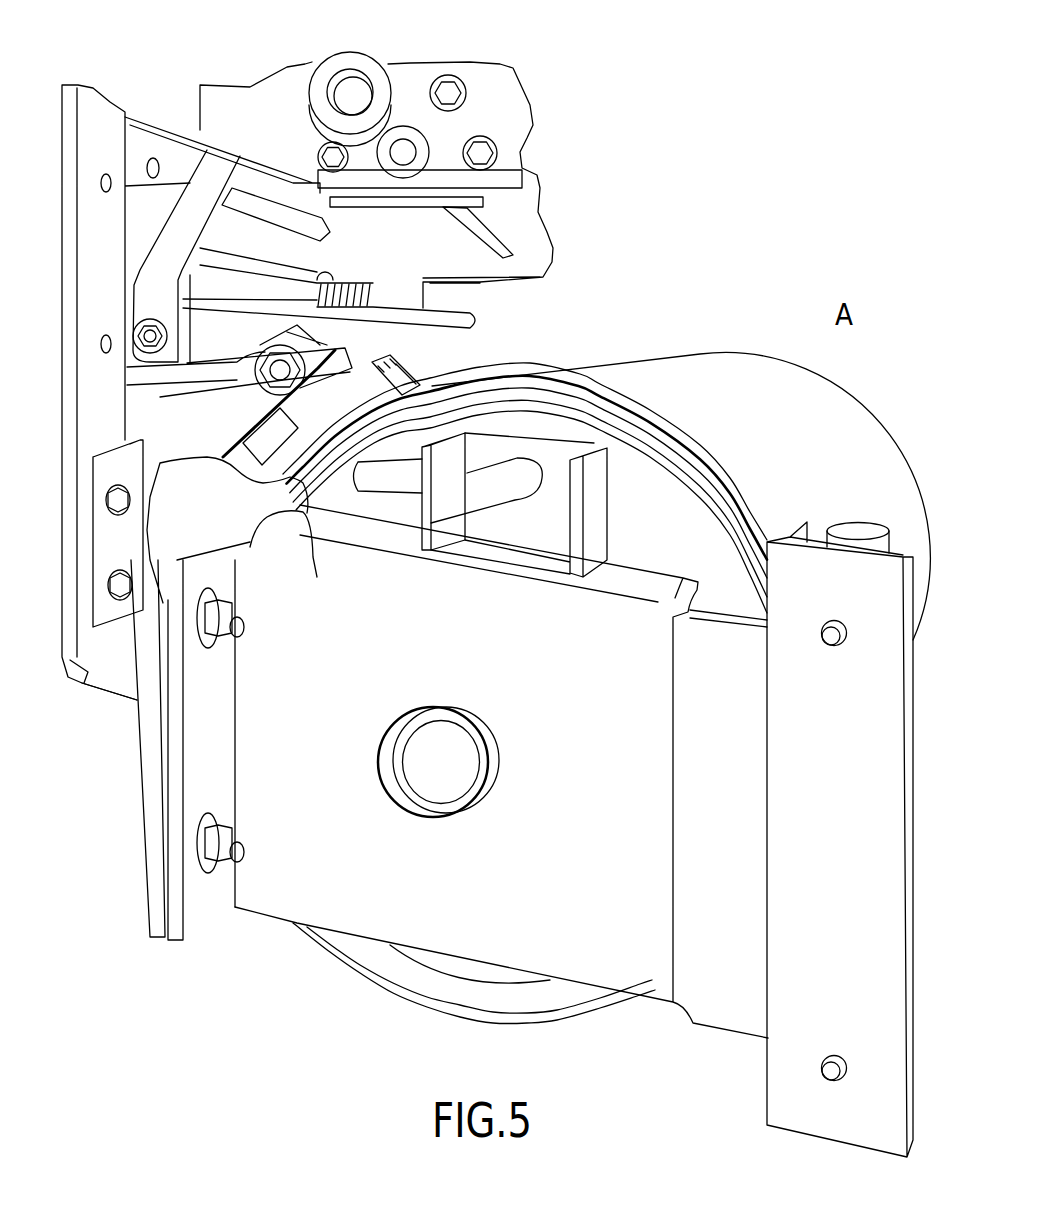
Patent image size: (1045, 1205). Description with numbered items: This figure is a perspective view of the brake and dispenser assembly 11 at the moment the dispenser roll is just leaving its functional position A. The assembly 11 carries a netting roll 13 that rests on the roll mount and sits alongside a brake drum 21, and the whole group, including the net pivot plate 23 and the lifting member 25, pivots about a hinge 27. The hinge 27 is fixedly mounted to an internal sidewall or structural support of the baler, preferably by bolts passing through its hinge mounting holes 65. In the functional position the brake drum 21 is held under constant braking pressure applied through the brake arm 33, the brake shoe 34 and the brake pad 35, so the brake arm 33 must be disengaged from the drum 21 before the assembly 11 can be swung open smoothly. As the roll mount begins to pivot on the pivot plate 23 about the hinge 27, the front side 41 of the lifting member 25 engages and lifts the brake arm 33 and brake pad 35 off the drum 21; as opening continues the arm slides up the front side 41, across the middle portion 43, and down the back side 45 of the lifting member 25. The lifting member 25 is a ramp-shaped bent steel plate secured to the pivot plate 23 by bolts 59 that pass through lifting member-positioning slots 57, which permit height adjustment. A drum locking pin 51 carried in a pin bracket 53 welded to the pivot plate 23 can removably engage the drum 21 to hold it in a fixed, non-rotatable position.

The dispenser roll assembly 11 is at (898, 355).
The roll 13 is at (763, 360).
The brake drum 21 is at (527, 400).
The net pivot plate 23 is at (588, 855).
The lifting member 25 is at (267, 485).
The hinge 27 is at (848, 890).
The brake arm 33 is at (223, 427).
The brake shoe 34 is at (350, 342).
The brake pad 35 is at (350, 400).
The front side 41 is at (268, 530).
The middle portion 43 is at (200, 467).
The back side 45 is at (175, 515).
The drum locking pin 51 is at (392, 487).
The pin bracket 53 is at (597, 520).
The lifting member-positioning slots 57 is at (227, 593).
The bolts 59 is at (243, 630).
The hinge mounting holes 65 is at (832, 627).